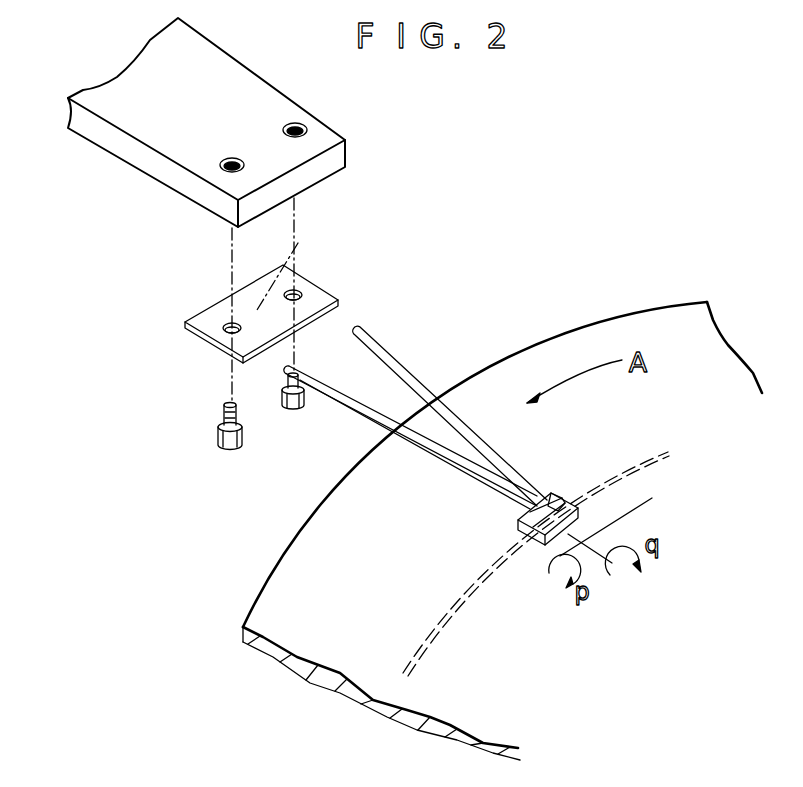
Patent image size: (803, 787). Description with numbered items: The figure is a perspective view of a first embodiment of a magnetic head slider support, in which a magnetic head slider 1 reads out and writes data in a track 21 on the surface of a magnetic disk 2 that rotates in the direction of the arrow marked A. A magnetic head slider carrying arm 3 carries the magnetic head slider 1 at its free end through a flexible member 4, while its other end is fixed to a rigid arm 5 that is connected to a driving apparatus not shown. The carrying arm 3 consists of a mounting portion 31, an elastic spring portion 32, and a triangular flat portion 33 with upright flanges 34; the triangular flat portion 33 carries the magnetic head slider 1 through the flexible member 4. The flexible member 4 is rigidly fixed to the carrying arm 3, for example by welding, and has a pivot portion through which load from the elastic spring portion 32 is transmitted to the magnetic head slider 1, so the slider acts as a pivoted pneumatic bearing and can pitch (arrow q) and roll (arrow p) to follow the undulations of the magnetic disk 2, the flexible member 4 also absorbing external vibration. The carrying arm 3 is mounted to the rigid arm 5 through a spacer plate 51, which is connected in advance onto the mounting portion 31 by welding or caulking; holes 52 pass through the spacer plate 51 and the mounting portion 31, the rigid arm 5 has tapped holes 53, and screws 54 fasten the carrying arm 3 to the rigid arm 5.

The magnetic head slider 1 is at (533, 523).
The magnetic disk 2 is at (440, 698).
The track 21 is at (430, 627).
The magnetic head slider carrying arm 3 is at (415, 414).
The mounting portion 31 is at (299, 267).
The elastic spring portion 32 is at (353, 327).
The triangular flat portion 33 is at (445, 443).
The upright flanges 34 is at (387, 349).
The flexible member 4 is at (560, 503).
The rigid arm 5 is at (219, 133).
The spacer plate 51 is at (236, 320).
The holes 52 is at (302, 292).
The tapped holes 53 is at (306, 128).
The screws 54 is at (292, 410).